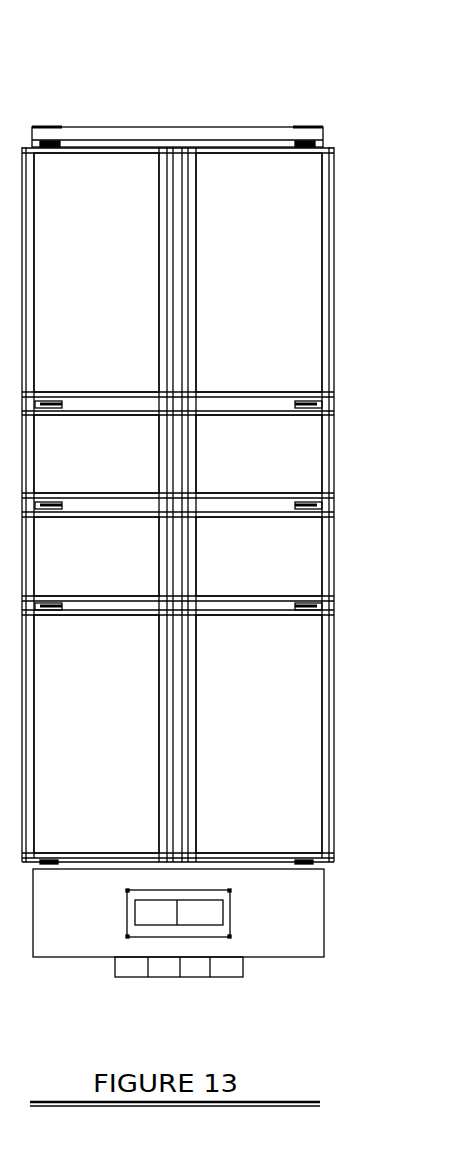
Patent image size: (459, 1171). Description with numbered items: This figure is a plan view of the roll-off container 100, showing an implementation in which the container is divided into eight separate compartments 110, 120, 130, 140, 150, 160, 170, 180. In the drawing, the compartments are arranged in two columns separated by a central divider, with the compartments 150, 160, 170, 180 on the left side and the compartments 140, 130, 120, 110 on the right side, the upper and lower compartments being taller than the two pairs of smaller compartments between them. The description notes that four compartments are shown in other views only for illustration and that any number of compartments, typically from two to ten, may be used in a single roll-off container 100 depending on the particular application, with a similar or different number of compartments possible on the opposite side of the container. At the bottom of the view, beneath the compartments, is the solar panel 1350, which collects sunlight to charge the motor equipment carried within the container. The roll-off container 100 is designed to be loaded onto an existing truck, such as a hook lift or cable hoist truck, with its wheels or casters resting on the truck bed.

The roll-off container 100 is at (148, 120).
The compartment 110 is at (231, 725).
The compartment 120 is at (235, 563).
The compartment 130 is at (233, 462).
The compartment 140 is at (231, 268).
The compartment 150 is at (125, 268).
The compartment 160 is at (125, 462).
The compartment 170 is at (125, 563).
The compartment 180 is at (126, 725).
The solar panel 1350 is at (235, 940).